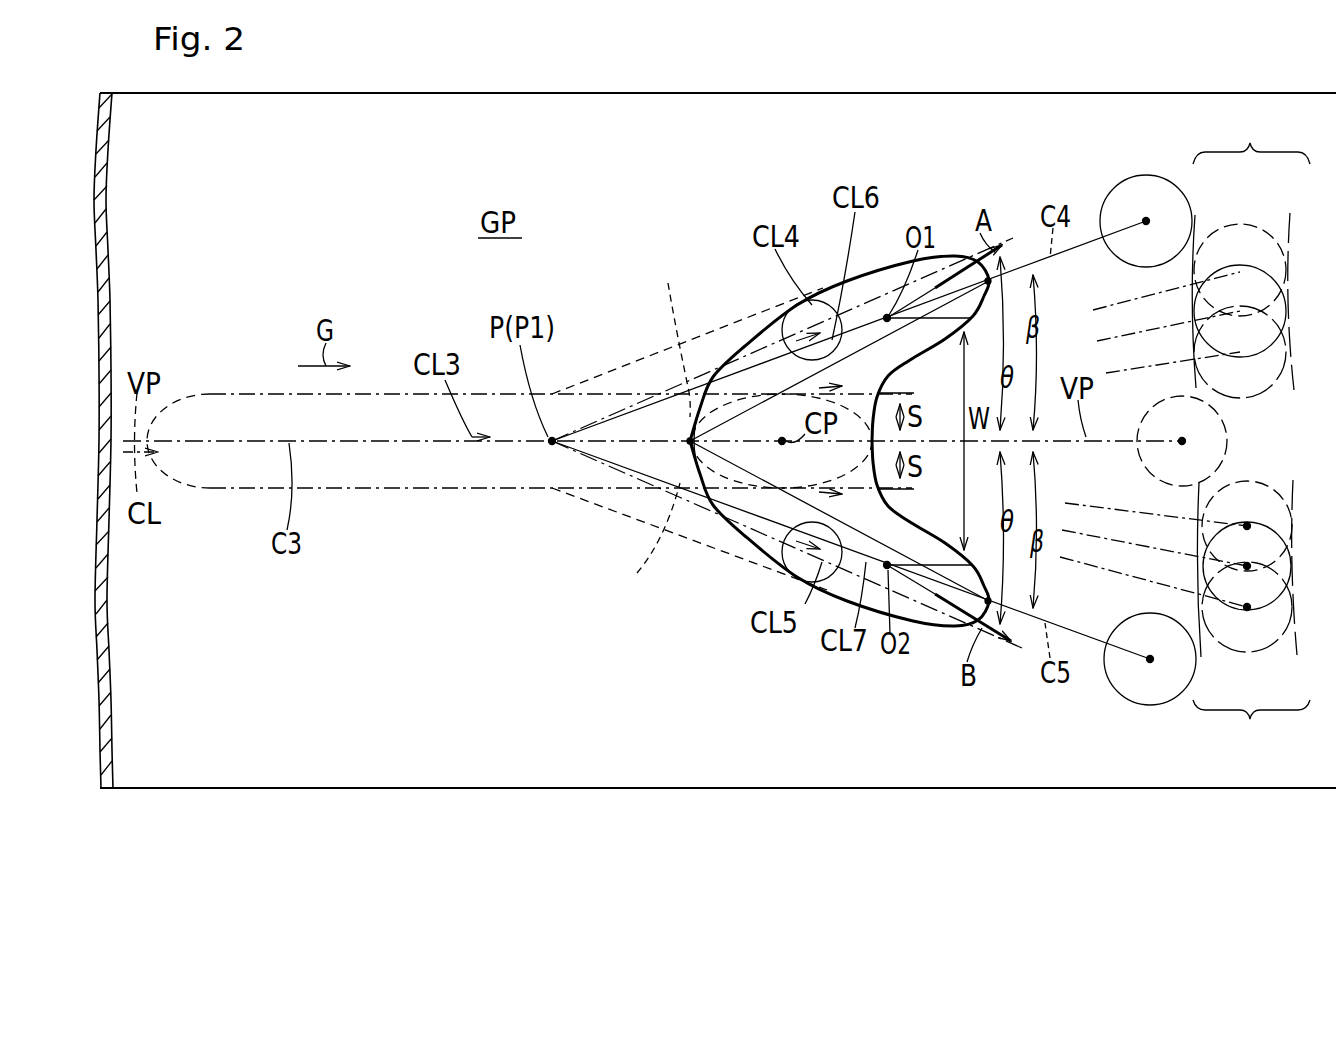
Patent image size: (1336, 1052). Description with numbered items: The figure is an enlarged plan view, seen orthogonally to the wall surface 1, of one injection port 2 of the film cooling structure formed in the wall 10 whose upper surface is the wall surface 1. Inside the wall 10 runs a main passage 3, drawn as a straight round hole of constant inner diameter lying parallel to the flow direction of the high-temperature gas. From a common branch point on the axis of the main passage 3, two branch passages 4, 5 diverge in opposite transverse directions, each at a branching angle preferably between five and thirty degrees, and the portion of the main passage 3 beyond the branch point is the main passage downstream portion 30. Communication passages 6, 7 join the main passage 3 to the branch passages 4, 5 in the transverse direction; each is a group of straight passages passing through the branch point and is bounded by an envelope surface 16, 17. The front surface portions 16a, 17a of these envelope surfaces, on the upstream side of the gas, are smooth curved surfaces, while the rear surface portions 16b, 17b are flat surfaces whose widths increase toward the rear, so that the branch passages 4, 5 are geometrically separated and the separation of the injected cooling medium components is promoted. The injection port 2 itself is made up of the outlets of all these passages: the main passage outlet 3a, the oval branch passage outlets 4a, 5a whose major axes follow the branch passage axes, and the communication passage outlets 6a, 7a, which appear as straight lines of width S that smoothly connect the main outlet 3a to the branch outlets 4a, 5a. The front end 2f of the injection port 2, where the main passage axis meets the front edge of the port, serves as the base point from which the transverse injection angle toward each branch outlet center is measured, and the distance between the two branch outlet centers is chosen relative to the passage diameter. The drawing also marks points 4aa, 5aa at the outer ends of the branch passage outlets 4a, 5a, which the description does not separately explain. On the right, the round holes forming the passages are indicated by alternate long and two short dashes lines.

The wall surface 1 is at (143, 273).
The wall 10 is at (102, 612).
The injection port 2 is at (757, 322).
The front end of injection port 2f is at (688, 432).
The main passage 3 is at (375, 490).
The main passage outlet 3a is at (760, 484).
The branch passage 4 is at (610, 372).
The branch passage outlet 4a is at (817, 300).
The outer edge point of first spray 4aa is at (985, 278).
The branch passage 5 is at (640, 521).
The branch passage outlet 5a is at (825, 592).
The outer edge point of second spray 5aa is at (983, 604).
The communication passage 6 is at (863, 350).
The communication passage outlet 6a is at (707, 385).
The communication passage 7 is at (875, 590).
The communication passage outlet 7a is at (707, 513).
The envelope surface 16 is at (746, 340).
The front surface portion 16a is at (1198, 222).
The rear surface portion 16b is at (888, 378).
The envelope surface 17 is at (754, 550).
The front surface portion 17a is at (1213, 672).
The rear surface portion 17b is at (888, 504).
The main passage downstream portion 30 is at (583, 488).